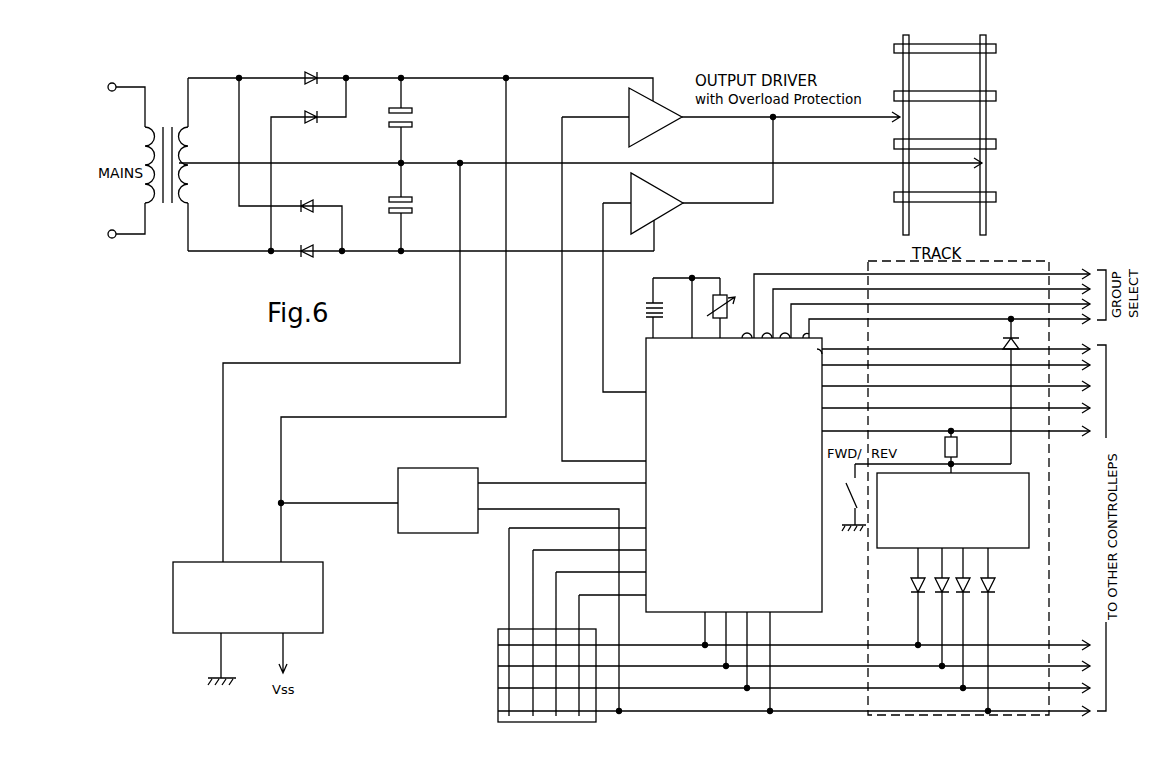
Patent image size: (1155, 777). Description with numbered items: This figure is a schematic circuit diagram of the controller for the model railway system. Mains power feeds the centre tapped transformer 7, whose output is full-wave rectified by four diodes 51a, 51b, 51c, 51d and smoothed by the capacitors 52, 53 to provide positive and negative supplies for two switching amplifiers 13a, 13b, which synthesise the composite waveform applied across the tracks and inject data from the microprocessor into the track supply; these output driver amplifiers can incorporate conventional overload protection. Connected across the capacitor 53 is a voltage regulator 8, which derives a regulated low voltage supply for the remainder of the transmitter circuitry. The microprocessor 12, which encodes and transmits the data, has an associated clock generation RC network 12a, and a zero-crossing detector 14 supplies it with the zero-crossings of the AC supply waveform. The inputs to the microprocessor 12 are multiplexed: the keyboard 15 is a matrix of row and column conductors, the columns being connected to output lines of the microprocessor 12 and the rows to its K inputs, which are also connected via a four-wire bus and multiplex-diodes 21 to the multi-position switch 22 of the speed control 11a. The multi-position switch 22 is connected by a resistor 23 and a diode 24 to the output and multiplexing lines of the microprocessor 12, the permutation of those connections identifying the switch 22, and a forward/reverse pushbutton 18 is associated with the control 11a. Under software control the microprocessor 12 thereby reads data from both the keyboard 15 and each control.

The centre tapped transformer 7 is at (163, 103).
The rectifier diode 51a is at (318, 74).
The rectifier diode 51b is at (316, 120).
The rectifier diode 51c is at (316, 203).
The rectifier diode 51d is at (313, 248).
The smoothing capacitor 52 is at (410, 75).
The smoothing capacitor 53 is at (412, 210).
The switching amplifier 13a is at (731, 117).
The switching amplifier 13b is at (688, 184).
The microprocessor 12 is at (736, 468).
The clock generation RC network 12a is at (688, 277).
The zero-crossing detector 14 is at (443, 466).
The voltage regulator 8 is at (323, 596).
The keyboard 15 is at (497, 637).
The speed control 11a is at (1021, 262).
The diode 24 is at (1003, 341).
The resistor 23 is at (957, 451).
The pushbutton 18 is at (851, 494).
The multi-position switch 22 is at (1029, 513).
The multiplex-diodes 21 is at (995, 589).